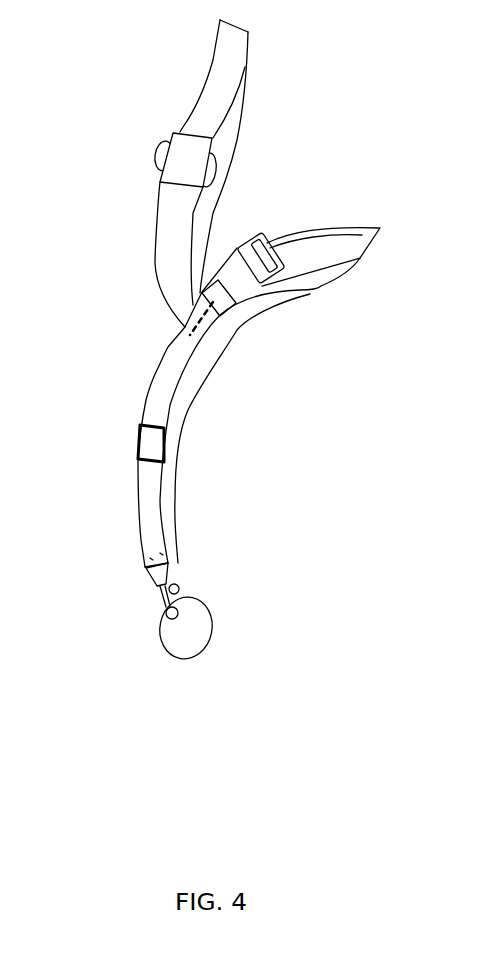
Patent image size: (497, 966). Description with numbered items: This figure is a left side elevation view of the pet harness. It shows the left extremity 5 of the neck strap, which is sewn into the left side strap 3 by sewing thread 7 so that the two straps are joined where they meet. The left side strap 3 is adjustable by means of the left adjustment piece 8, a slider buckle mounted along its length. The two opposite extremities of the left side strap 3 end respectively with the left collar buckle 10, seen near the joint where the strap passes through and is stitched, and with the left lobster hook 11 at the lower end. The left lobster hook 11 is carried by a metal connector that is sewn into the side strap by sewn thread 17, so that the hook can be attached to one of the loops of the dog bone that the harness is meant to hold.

The left side strap 3 is at (118, 397).
The left extremity 5 is at (148, 288).
The sewing thread 7 is at (224, 324).
The left adjustment piece 8 is at (181, 456).
The left collar buckle 10 is at (269, 234).
The left lobster hook 11 is at (138, 613).
The sewn thread 17 is at (185, 567).